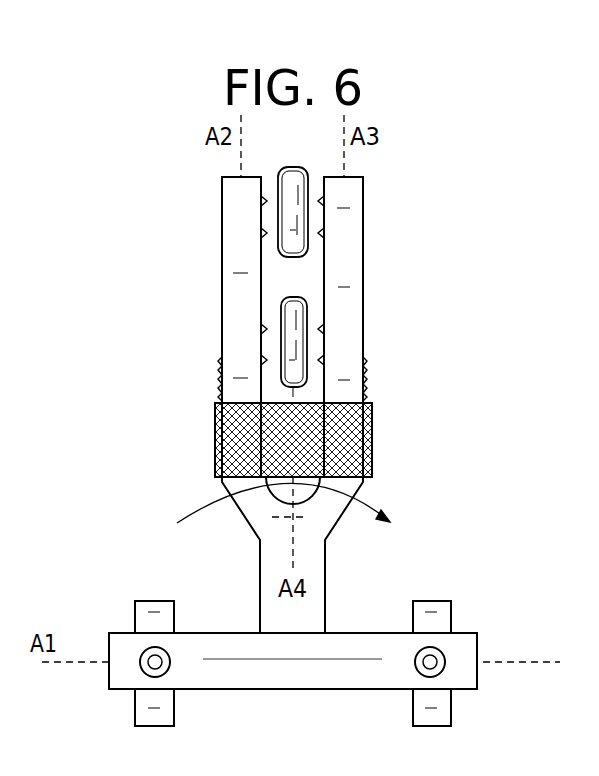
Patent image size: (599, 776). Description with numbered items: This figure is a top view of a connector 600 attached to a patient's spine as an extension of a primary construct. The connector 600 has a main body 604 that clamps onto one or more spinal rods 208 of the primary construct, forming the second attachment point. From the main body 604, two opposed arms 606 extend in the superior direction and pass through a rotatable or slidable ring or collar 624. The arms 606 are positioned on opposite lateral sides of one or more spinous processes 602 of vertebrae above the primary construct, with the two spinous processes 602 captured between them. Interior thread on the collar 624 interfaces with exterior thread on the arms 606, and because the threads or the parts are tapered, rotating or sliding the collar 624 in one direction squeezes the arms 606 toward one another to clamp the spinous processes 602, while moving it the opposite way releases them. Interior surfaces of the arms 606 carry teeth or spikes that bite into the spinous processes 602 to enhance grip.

The connector 600 is at (158, 253).
The spinous processes 602 is at (297, 181).
The main body 604 is at (247, 651).
The arms 606 is at (235, 250).
The collar 624 is at (215, 427).
The spinal rods 208 is at (135, 611).